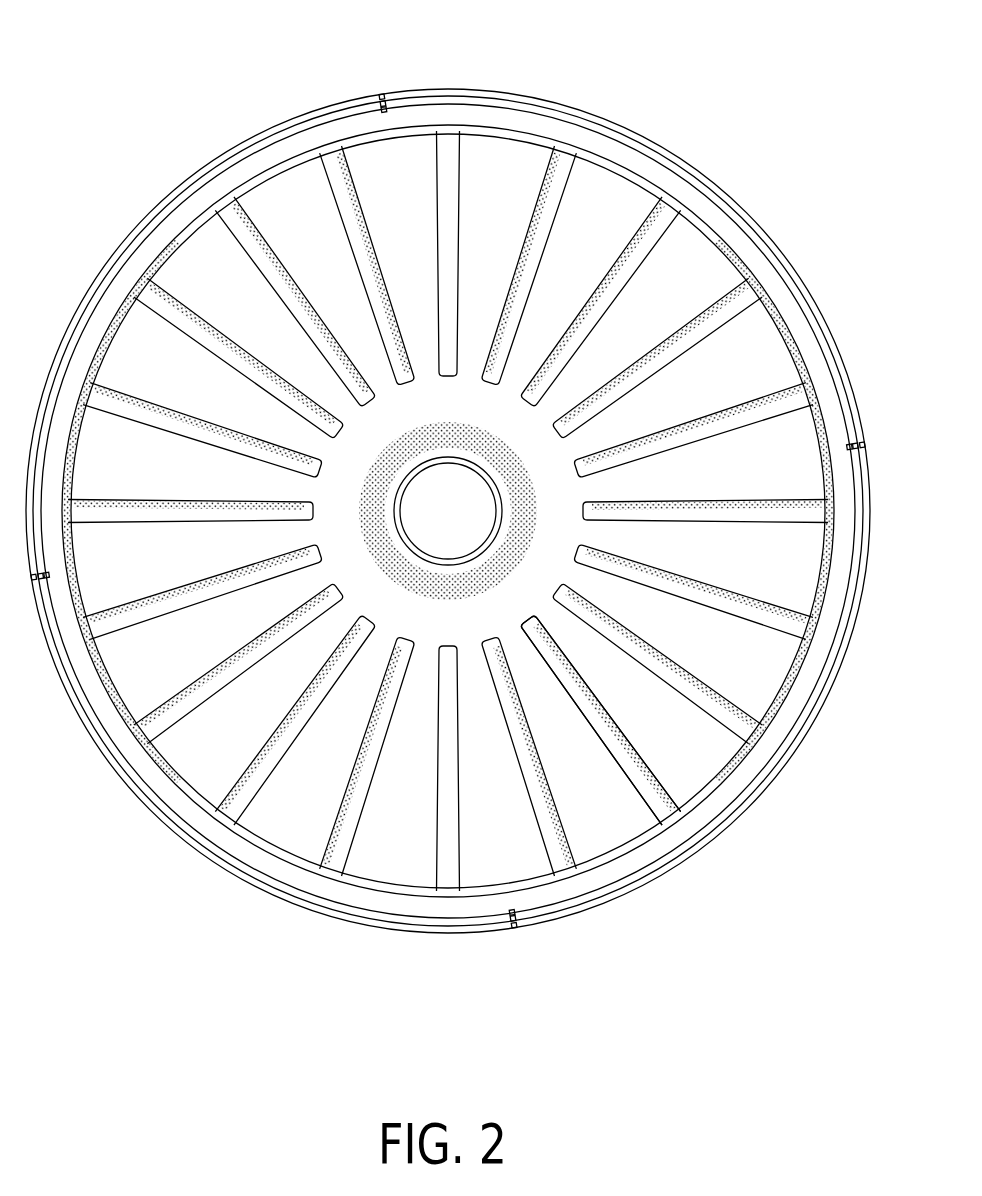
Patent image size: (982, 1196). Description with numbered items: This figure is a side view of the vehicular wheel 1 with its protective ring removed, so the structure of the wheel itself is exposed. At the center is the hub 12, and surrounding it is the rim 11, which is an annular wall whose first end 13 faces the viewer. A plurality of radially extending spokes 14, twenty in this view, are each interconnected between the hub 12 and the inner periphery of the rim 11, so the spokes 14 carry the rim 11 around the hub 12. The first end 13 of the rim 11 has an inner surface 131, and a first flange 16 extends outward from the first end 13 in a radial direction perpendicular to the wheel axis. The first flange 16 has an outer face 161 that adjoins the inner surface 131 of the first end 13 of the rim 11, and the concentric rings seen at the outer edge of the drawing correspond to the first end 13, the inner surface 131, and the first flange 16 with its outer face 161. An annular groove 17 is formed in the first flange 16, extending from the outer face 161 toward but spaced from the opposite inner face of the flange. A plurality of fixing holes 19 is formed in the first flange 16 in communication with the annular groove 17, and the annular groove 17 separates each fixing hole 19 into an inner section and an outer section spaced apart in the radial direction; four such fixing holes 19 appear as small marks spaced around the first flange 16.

The wheel 1 is at (448, 508).
The rim 11 is at (395, 863).
The hub 12 is at (373, 588).
The first end 13 is at (448, 491).
The inner surface 131 is at (505, 128).
The spokes 14 is at (603, 730).
The first flange 16 is at (448, 521).
The outer face 161 is at (465, 908).
The annular groove 17 is at (285, 120).
The fixing holes 19 is at (387, 92).